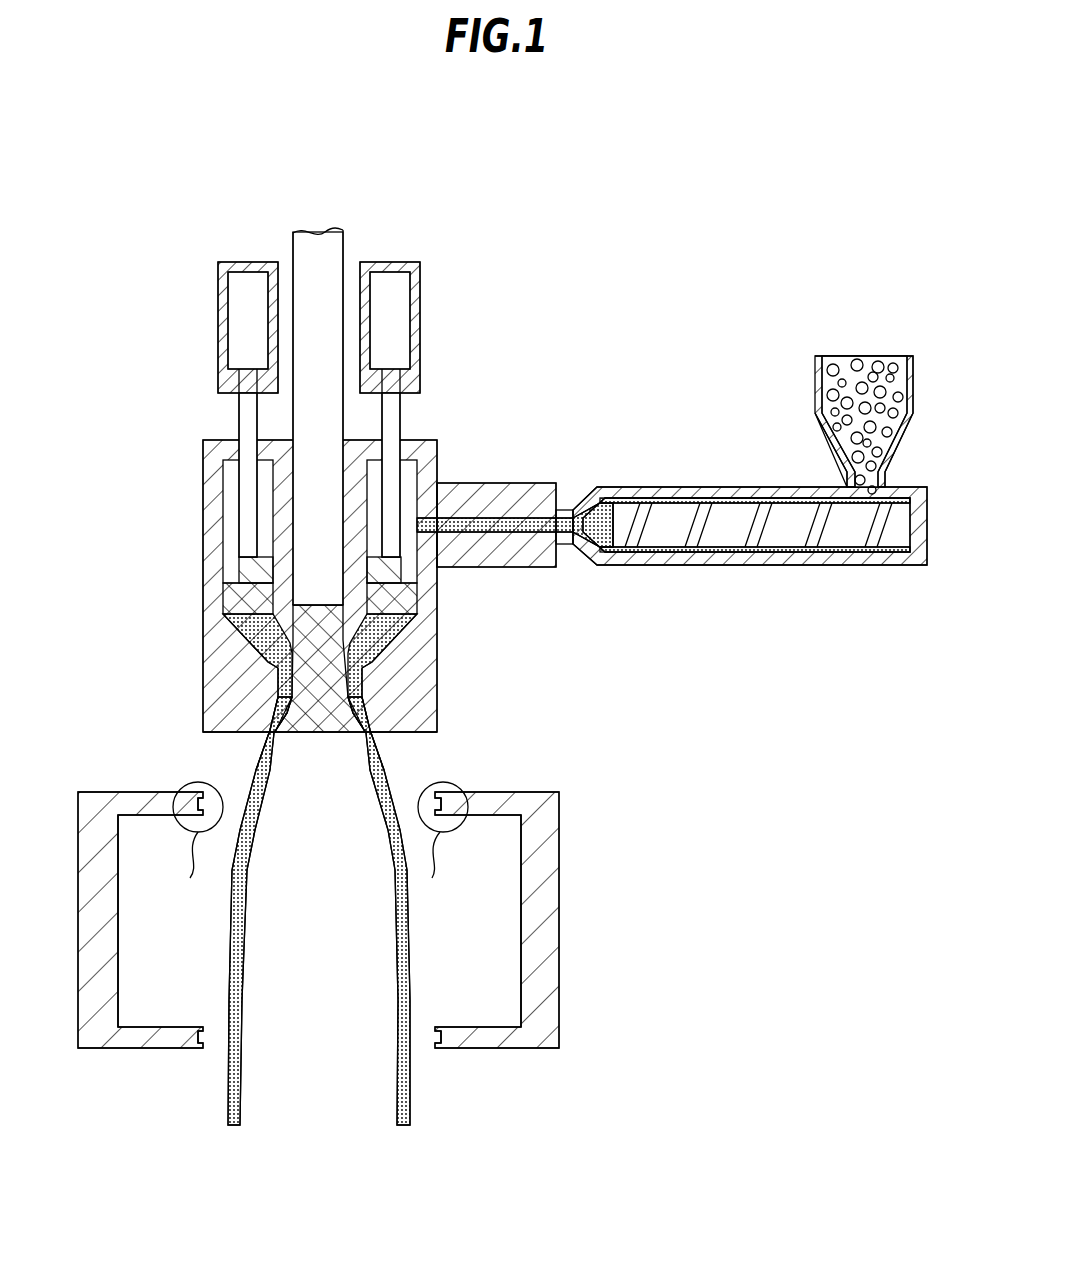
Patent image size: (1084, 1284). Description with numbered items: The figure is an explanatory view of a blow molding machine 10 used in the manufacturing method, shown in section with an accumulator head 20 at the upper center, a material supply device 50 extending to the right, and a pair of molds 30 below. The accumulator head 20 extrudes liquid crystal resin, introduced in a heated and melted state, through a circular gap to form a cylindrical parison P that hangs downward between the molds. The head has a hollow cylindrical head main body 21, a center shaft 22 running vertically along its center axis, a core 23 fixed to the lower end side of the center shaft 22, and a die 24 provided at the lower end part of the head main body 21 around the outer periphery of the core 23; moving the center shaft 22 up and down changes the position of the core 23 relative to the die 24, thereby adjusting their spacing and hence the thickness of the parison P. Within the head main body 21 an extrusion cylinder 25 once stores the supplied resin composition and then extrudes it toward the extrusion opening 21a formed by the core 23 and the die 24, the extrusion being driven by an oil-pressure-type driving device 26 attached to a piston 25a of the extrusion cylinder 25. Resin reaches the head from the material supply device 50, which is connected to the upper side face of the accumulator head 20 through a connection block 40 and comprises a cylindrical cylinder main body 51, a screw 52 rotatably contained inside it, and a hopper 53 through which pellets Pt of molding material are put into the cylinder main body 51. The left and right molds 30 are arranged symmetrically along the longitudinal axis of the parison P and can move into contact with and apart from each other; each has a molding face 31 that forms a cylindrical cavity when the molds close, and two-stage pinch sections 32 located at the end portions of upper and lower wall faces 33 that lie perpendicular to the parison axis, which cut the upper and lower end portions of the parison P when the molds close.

The blow molding machine 10 is at (497, 390).
The accumulator head 20 is at (186, 478).
The head main body 21 is at (203, 548).
The extrusion opening 21a is at (255, 737).
The center shaft 22 is at (343, 240).
The core 23 is at (320, 720).
The die 24 is at (437, 680).
The extrusion cylinder 25 is at (250, 662).
The piston 25a is at (250, 625).
The driving device 26 is at (218, 296).
The mold 30 is at (117, 788).
The molding face 31 is at (118, 942).
The two-stage pinch section 32 is at (203, 800).
The wall face 33 is at (170, 794).
The connection block 40 is at (525, 490).
The material supply device 50 is at (826, 578).
The cylinder main body 51 is at (715, 490).
The screw 52 is at (742, 547).
The hopper 53 is at (815, 385).
The parison P is at (240, 1093).
The pellets Pt is at (866, 360).